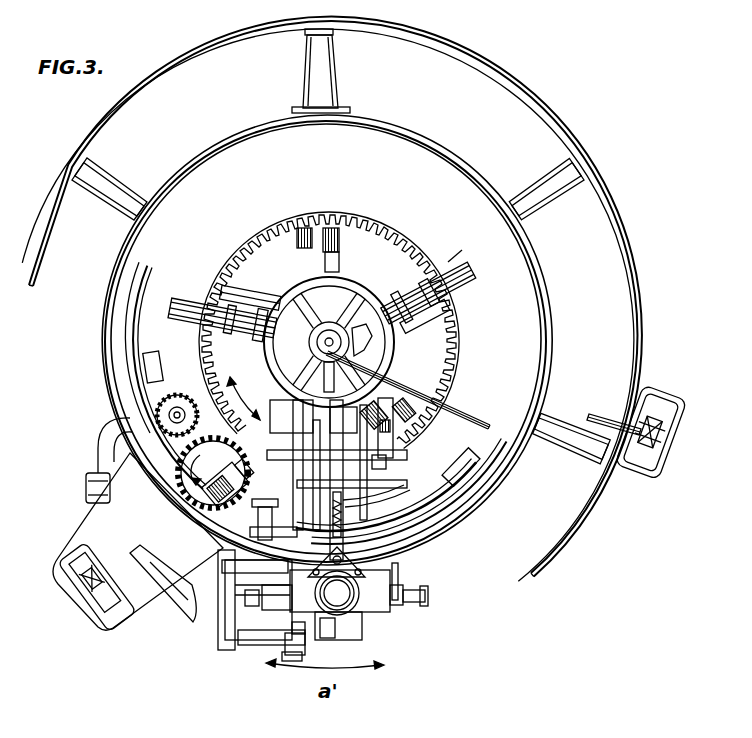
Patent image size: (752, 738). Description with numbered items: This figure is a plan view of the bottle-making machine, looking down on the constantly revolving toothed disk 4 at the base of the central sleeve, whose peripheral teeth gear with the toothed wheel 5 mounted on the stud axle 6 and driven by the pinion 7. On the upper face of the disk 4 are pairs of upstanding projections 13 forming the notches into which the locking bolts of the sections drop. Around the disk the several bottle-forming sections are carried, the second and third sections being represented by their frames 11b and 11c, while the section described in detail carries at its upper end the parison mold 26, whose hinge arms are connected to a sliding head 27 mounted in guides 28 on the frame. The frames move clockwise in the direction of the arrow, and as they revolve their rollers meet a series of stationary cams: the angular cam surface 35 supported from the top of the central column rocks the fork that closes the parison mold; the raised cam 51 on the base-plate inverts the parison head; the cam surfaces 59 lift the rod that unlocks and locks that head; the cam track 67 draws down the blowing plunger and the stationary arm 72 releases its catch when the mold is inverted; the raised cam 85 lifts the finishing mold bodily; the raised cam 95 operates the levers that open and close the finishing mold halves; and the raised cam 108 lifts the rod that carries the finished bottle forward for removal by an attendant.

The raised cam surface 95 is at (123, 104).
The raised cam surface 85 is at (212, 161).
The stationary cam surfaces 59 is at (143, 290).
The raised cam surface 108 is at (478, 491).
The stationary raised cam surface 51 is at (152, 372).
The toothed disk 4 is at (236, 357).
The stationary angular cam surface 35 is at (384, 354).
The frame 11c is at (178, 304).
The frame 11b is at (470, 270).
The upstanding parts or projections 13 is at (328, 228).
The pinion 7 is at (168, 412).
The toothed wheel 5 is at (195, 450).
The stud axle 6 is at (222, 472).
The stationary cam track 67 is at (163, 576).
The stationary arm 72 is at (598, 418).
The guides 28 is at (386, 464).
The sliding head 27 is at (396, 488).
The parison mold 26 is at (358, 620).